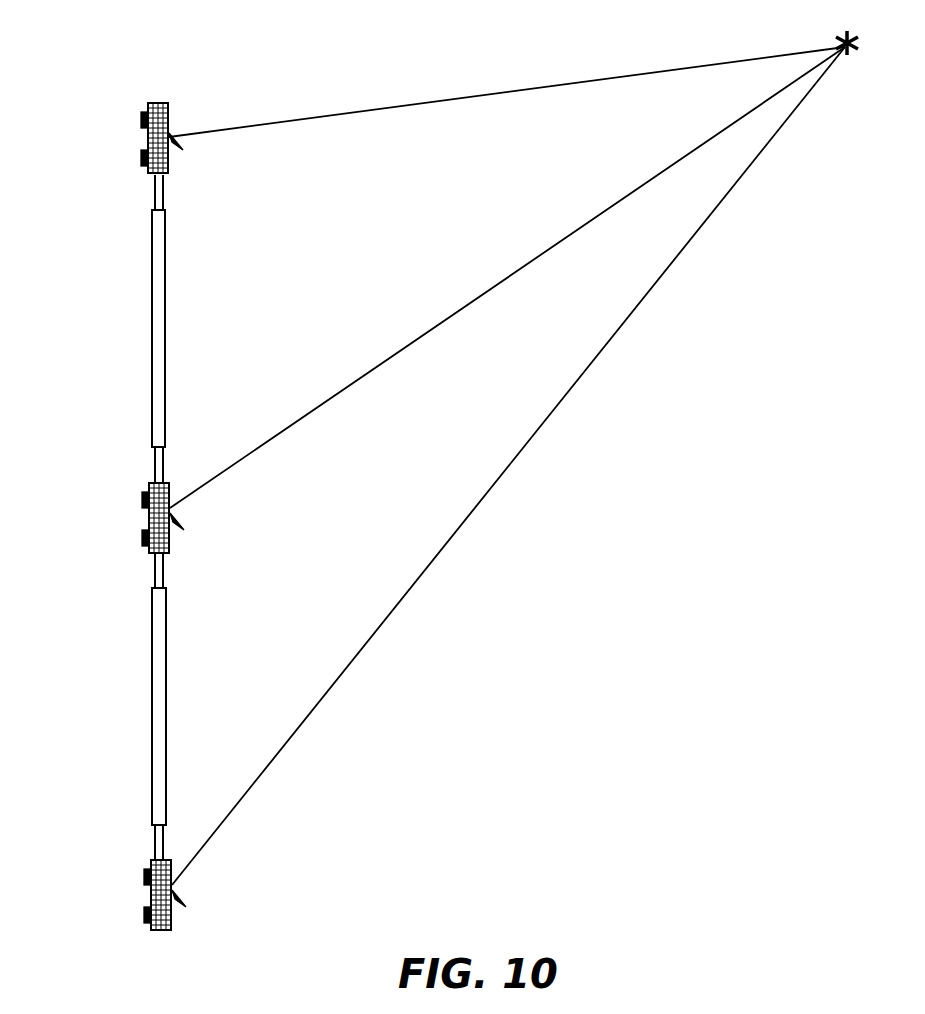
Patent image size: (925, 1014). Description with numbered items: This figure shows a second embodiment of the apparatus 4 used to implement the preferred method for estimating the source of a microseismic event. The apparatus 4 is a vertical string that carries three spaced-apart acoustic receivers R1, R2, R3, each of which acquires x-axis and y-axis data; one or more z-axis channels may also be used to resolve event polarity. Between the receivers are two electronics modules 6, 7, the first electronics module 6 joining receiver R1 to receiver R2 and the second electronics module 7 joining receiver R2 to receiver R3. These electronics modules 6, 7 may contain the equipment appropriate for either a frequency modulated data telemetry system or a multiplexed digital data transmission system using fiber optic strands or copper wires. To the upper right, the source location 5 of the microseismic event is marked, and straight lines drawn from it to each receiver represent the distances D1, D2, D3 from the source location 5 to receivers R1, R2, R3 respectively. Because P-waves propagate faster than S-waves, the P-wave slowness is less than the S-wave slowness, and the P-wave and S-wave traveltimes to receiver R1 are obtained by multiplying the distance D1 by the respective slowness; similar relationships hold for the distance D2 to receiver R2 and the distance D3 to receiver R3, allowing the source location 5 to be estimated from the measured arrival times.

The apparatus 4 is at (80, 246).
The source location 5 is at (855, 50).
The electronics module 6 is at (165, 330).
The electronics module 7 is at (167, 727).
The acoustic receiver R1 is at (148, 146).
The acoustic receiver R2 is at (149, 524).
The acoustic receiver R3 is at (151, 900).
The distance D1 is at (396, 105).
The distance D2 is at (396, 354).
The distance D3 is at (398, 600).